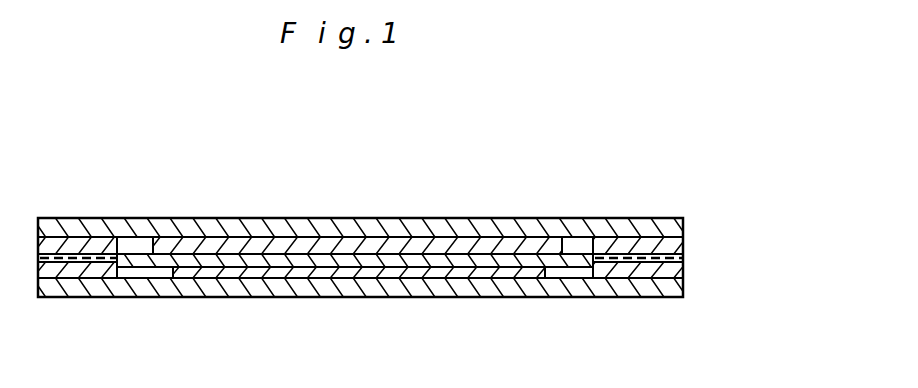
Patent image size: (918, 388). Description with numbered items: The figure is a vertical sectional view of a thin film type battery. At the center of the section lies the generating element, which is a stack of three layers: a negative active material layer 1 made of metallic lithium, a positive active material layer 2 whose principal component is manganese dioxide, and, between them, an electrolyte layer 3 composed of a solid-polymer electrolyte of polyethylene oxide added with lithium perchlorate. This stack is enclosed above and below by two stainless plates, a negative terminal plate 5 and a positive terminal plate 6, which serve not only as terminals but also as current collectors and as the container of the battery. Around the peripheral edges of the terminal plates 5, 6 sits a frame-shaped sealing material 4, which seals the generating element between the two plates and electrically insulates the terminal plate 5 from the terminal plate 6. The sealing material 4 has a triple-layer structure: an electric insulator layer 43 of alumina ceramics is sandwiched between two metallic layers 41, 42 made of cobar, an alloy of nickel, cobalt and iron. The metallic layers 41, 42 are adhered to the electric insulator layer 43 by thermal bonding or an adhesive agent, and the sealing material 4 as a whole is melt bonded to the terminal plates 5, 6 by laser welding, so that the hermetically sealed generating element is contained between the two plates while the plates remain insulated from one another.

The negative active material layer 1 is at (386, 271).
The positive active material layer 2 is at (397, 243).
The electrolyte layer 3 is at (478, 258).
The sealing material 4 is at (420, 249).
The metallic layer 41 is at (684, 235).
The metallic layer 42 is at (393, 285).
The electric insulator layer 43 is at (684, 253).
The negative terminal plate 5 is at (248, 290).
The positive terminal plate 6 is at (249, 222).